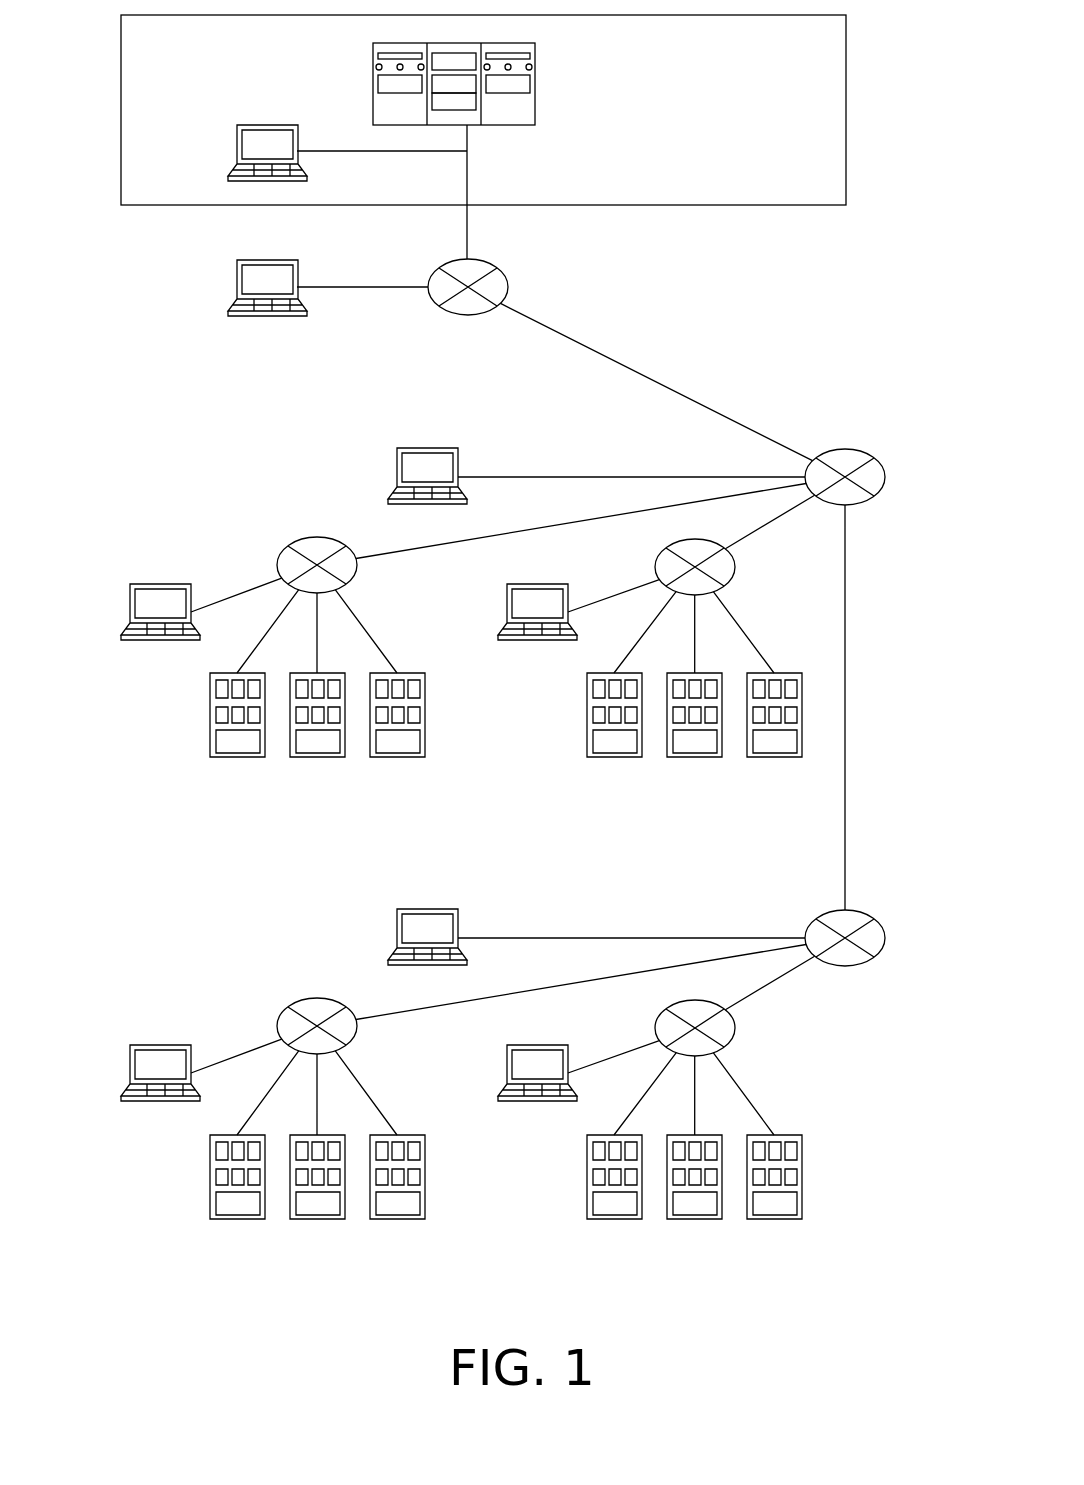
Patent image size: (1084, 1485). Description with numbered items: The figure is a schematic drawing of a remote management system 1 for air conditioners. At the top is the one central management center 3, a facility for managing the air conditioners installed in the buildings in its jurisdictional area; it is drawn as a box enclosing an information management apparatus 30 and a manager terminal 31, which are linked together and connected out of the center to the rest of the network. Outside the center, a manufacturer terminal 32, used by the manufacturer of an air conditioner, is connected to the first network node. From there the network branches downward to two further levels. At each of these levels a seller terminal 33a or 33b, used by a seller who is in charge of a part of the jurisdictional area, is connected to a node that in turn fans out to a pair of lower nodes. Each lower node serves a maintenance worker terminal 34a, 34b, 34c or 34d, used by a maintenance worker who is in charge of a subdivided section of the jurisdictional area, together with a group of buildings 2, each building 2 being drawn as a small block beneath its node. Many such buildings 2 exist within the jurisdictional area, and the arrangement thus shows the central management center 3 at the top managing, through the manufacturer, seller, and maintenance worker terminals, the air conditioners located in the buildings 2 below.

The remote management system 1 is at (778, 387).
The building 2 is at (245, 758).
The central management center 3 is at (792, 205).
The information management apparatus 30 is at (537, 62).
The manager terminal 31 is at (236, 152).
The manufacturer terminal 32 is at (236, 289).
The seller terminal 33a is at (397, 473).
The seller terminal 33b is at (397, 934).
The maintenance worker terminal 34a is at (165, 641).
The maintenance worker terminal 34b is at (542, 641).
The maintenance worker terminal 34c is at (165, 1102).
The maintenance worker terminal 34d is at (542, 1102).